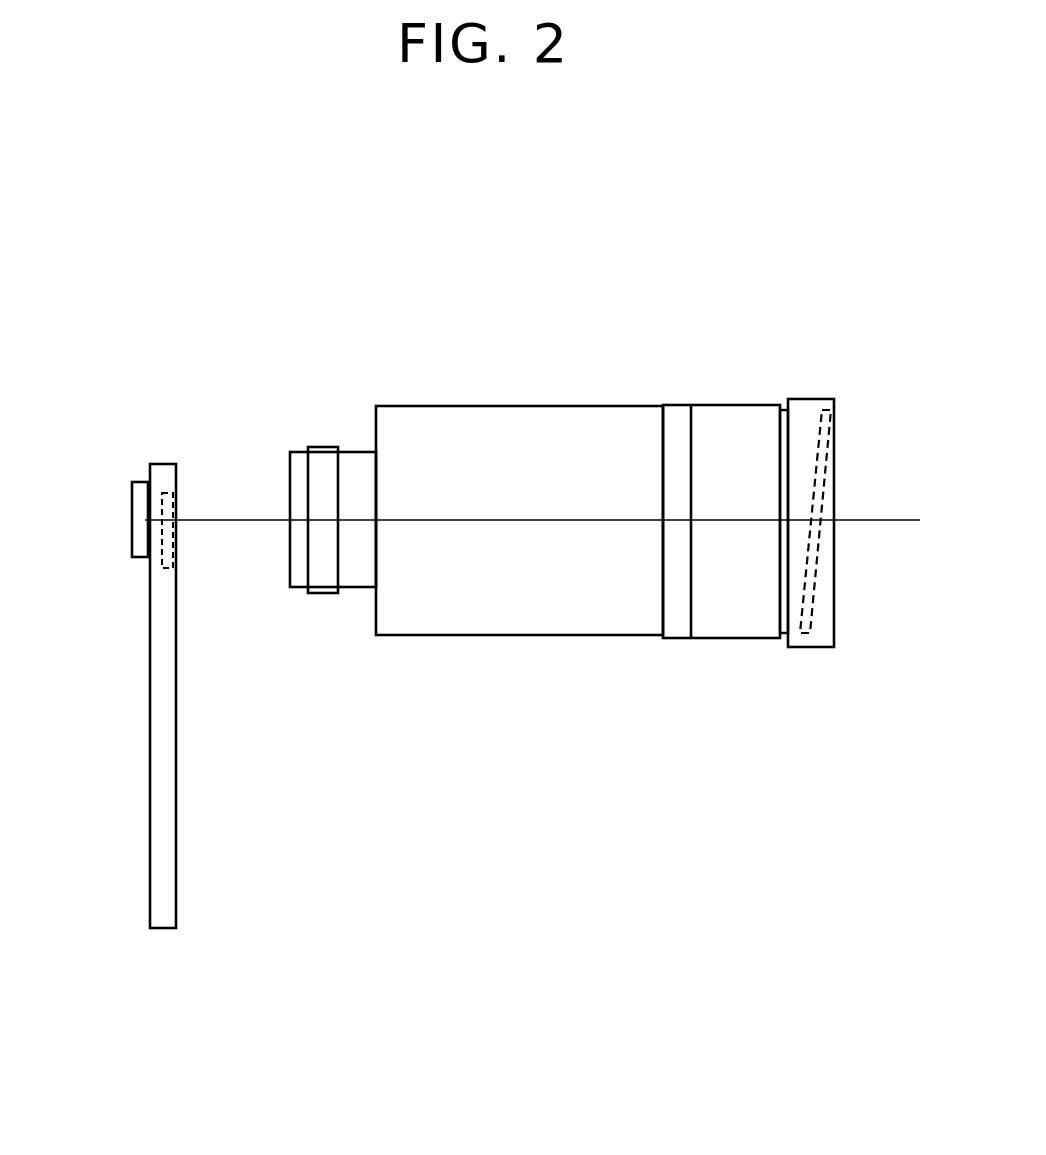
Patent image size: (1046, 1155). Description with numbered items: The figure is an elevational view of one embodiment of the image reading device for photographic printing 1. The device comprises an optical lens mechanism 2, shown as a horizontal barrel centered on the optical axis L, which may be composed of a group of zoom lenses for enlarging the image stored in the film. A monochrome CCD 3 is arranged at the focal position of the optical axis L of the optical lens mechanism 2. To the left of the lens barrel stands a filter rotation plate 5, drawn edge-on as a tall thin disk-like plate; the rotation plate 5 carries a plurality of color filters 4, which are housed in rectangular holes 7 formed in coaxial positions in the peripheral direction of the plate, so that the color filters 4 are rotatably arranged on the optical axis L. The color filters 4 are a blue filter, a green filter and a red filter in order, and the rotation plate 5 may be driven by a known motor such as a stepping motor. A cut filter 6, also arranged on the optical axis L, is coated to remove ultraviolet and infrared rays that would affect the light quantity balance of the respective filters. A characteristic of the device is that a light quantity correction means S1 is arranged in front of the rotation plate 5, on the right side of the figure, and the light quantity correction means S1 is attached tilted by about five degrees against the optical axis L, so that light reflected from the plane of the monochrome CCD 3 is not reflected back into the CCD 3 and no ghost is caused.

The image reading device for photographic printing 1 is at (460, 342).
The optical lens mechanism 2 is at (595, 433).
The monochrome CCD 3 is at (140, 517).
The color filters 4 is at (152, 567).
The filter rotation plate 5 is at (162, 477).
The cut filter 6 is at (178, 567).
The rectangular holes 7 is at (178, 502).
The light quantity correction means S1 is at (813, 430).
The optical axis L is at (875, 520).